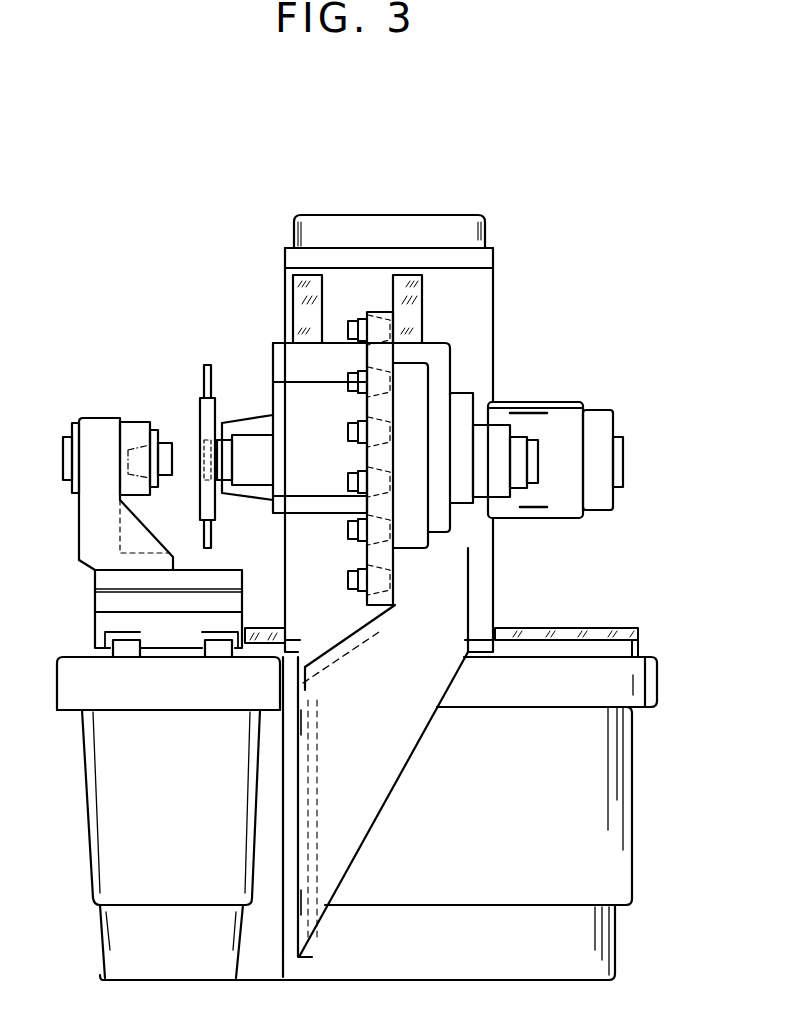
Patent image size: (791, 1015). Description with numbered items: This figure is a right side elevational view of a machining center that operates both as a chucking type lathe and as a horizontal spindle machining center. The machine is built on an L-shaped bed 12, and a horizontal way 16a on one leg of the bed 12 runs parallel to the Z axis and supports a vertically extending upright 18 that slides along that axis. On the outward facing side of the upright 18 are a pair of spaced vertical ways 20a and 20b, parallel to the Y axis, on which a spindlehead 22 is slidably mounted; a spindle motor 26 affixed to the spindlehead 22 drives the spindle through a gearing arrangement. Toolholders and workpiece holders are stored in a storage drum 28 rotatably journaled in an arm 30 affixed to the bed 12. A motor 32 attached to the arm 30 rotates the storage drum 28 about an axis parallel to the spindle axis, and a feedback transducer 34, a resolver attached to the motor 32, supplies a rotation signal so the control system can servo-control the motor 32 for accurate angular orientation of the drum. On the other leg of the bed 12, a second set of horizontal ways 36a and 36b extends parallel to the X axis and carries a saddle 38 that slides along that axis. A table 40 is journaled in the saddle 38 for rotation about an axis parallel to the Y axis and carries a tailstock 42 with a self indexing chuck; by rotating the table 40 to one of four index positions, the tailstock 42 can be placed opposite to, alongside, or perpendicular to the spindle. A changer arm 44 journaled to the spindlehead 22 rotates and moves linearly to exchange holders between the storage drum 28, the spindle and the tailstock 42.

The bed 12 is at (612, 780).
The horizontal way 16a is at (587, 637).
The upright 18 is at (480, 342).
The vertical way 20a is at (312, 292).
The vertical way 20b is at (412, 292).
The spindlehead 22 is at (277, 360).
The spindle motor 26 is at (563, 410).
The storage drum 28 is at (412, 548).
The arm 30 is at (382, 773).
The motor 32 is at (490, 483).
The feedback transducer 34 is at (533, 473).
The horizontal way 36a is at (125, 653).
The horizontal way 36b is at (213, 653).
The saddle 38 is at (100, 625).
The table 40 is at (105, 577).
The tailstock 42 is at (95, 418).
The changer arm 44 is at (202, 372).